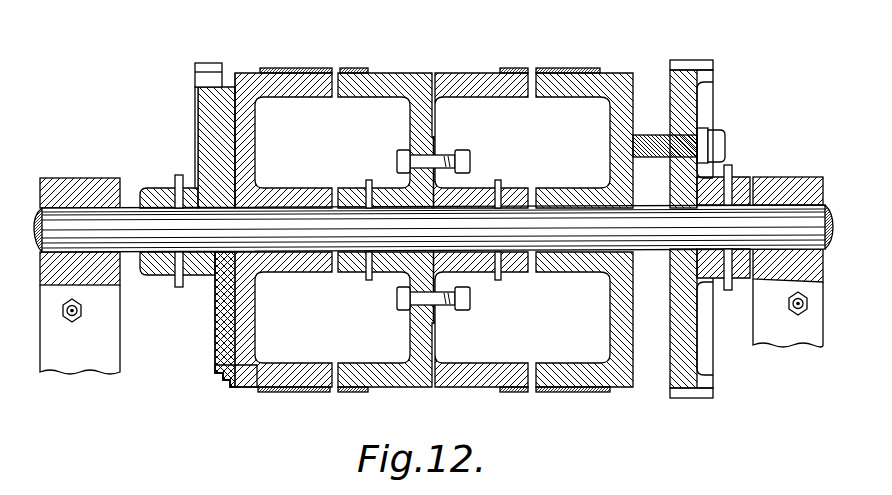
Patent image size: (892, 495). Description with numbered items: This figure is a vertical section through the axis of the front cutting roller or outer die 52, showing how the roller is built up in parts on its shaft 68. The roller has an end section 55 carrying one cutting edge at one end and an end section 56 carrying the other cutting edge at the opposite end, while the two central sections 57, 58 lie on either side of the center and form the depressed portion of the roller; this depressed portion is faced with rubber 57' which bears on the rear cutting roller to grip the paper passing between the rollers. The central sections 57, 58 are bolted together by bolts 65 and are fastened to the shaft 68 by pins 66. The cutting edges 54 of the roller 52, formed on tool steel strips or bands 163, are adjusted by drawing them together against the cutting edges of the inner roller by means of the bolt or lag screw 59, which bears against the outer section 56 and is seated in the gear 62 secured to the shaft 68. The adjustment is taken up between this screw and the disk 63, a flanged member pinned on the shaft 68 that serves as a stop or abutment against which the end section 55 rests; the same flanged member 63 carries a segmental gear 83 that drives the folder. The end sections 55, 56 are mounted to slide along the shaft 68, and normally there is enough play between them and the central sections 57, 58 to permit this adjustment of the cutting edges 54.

The tool steel strip or band 163 is at (308, 68).
The front cutting roller or outer die 52 is at (460, 71).
The segmental gear 83 is at (195, 78).
The shaft 68 is at (158, 230).
The bolts 65 is at (397, 160).
The bolt or lag screw 59 is at (725, 145).
The disk 63 is at (163, 275).
The end section 55 is at (250, 384).
The cutting edges 54 is at (332, 395).
The rubber facing 57' is at (350, 404).
The central section 57 is at (400, 398).
The central section 58 is at (485, 391).
The end section 56 is at (630, 389).
The gear 62 is at (710, 383).
The pins 66 is at (368, 279).